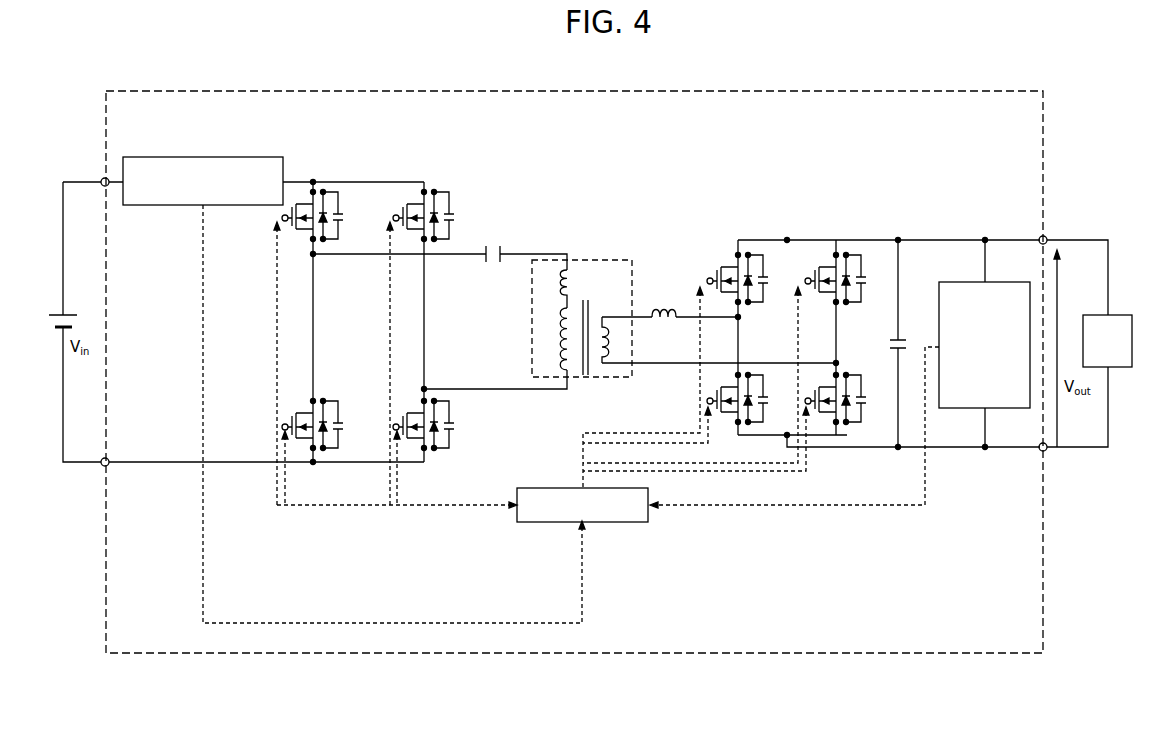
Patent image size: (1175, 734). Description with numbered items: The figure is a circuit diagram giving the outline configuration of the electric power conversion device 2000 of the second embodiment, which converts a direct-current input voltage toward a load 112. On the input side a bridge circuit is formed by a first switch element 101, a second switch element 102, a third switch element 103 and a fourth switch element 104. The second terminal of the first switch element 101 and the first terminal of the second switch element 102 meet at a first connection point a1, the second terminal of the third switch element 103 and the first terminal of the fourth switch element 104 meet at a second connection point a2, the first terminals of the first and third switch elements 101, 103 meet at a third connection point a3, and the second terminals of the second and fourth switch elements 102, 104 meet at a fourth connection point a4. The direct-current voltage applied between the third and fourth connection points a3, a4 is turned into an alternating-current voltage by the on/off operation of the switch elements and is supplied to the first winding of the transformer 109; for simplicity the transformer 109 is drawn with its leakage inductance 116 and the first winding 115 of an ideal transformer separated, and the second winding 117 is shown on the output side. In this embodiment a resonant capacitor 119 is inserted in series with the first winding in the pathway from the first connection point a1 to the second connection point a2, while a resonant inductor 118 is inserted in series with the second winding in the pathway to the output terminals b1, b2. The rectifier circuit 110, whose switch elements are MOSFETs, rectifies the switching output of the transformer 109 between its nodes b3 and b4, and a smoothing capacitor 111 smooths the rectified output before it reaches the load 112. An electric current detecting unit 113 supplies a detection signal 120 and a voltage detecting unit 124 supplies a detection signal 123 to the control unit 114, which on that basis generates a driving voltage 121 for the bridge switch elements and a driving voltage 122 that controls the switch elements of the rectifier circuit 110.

The electric power conversion device 2000 is at (880, 91).
The first switch element 101 is at (305, 186).
The second switch element 102 is at (292, 445).
The third switch element 103 is at (408, 188).
The fourth switch element 104 is at (408, 453).
The transformer 109 is at (566, 323).
The rectifier circuit 110 is at (785, 307).
The smoothing capacitor 111 is at (900, 338).
The load 112 is at (1118, 315).
The electric current detecting unit 113 is at (205, 157).
The control unit 114 is at (620, 523).
The first winding 115 is at (560, 340).
The leakage inductance 116 is at (560, 283).
The secondary winding 117 is at (601, 378).
The resonant inductor 118 is at (667, 307).
The resonant capacitor 119 is at (492, 245).
The detection signal 120 is at (376, 622).
The driving voltage 121 is at (458, 507).
The driving voltage 122 is at (583, 445).
The detection signal 123 is at (790, 507).
The voltage detecting unit 124 is at (990, 283).
The first connection point a1 is at (317, 256).
The second connection point a2 is at (428, 388).
The third connection point a3 is at (319, 181).
The fourth connection point a4 is at (318, 466).
The output terminal b1 is at (740, 318).
The output terminal b2 is at (840, 363).
The node b3 is at (785, 239).
The node b4 is at (787, 438).